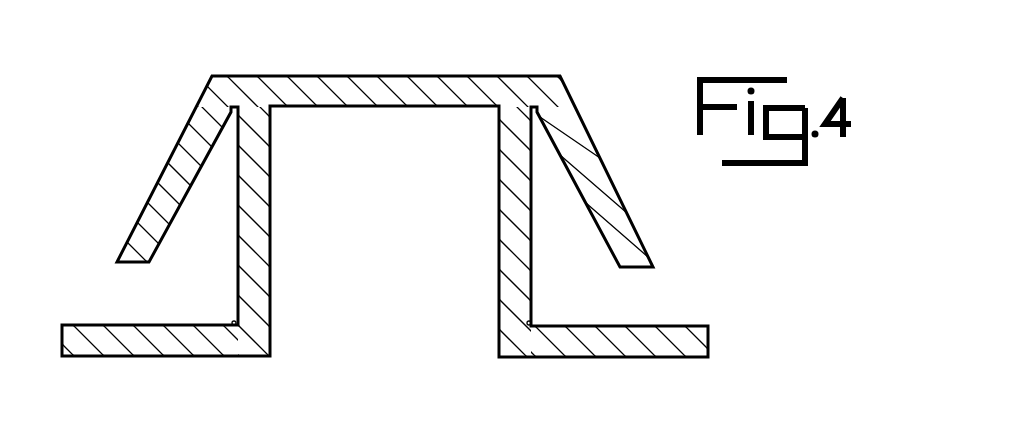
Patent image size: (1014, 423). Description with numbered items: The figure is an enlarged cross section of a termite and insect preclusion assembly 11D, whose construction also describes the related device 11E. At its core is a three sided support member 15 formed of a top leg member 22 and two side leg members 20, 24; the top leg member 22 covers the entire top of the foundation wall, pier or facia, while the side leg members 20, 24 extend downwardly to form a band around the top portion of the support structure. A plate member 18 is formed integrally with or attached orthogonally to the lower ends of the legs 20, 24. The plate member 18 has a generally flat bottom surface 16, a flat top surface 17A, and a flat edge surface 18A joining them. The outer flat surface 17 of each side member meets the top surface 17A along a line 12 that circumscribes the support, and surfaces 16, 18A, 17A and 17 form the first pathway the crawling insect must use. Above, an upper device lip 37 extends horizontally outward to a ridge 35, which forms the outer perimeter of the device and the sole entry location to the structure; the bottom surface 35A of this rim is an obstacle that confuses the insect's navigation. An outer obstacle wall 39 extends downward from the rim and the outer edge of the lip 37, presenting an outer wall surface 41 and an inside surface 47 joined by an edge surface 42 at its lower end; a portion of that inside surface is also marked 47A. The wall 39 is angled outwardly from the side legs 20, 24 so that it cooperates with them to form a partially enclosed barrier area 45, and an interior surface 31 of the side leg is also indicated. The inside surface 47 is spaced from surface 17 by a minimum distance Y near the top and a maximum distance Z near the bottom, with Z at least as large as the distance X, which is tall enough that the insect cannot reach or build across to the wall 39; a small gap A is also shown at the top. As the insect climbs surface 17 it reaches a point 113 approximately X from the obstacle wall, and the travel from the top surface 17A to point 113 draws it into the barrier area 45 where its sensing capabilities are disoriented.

The preclusion assembly 11D is at (475, 56).
The preclusion assembly 11E is at (520, 420).
The line 12 is at (229, 358).
The support member 15 is at (365, 225).
The bottom surface 16 is at (113, 358).
The outer flat surface 17 is at (237, 252).
The top surface 17A is at (118, 324).
The plate member 18 is at (165, 346).
The flat edge surface 18A is at (62, 350).
The side leg member 20 is at (268, 262).
The top leg member 22 is at (413, 99).
The side leg member 24 is at (507, 250).
The web inner surface 31 is at (500, 193).
The ridge 35 is at (212, 76).
The bottom surface of the rim 35A is at (540, 116).
The upper device lip 37 is at (238, 75).
The outer obstacle wall 39 is at (168, 163).
The outer wall surface 41 is at (141, 216).
The edge surface 42 is at (118, 263).
The barrier area 45 is at (196, 281).
The inside surface 47 is at (172, 220).
The wing inner surface portion 47A is at (588, 207).
The point 113 is at (208, 200).
The gap dimension A is at (213, 119).
The distance X is at (202, 165).
The minimum distance Y is at (234, 110).
The maximum distance Z is at (238, 263).